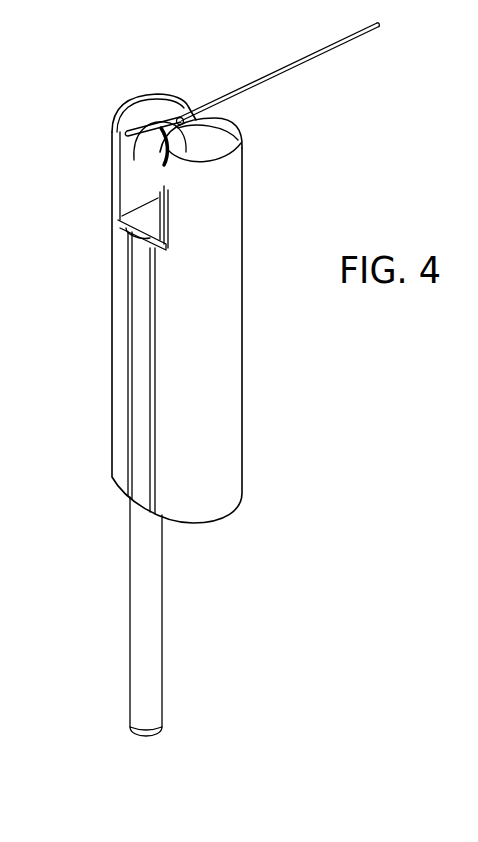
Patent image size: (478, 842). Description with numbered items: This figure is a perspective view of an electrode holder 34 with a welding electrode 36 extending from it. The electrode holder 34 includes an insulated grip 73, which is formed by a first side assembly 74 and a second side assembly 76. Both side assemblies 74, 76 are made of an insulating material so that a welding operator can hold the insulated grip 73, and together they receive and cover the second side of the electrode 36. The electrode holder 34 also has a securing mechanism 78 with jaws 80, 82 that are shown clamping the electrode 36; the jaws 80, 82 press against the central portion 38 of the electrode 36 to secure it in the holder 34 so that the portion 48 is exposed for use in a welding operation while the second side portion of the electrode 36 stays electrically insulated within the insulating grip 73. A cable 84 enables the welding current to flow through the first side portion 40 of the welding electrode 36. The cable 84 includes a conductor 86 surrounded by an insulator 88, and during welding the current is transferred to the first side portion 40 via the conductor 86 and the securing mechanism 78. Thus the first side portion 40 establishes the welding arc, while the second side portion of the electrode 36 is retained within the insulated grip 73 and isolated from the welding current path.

The electrode holder 34 is at (252, 222).
The welding electrode 36 is at (335, 58).
The central portion 38 is at (176, 126).
The first side portion 40 is at (301, 63).
The portion 48 is at (383, 26).
The insulated grip 73 is at (249, 177).
The first side assembly 74 is at (228, 313).
The second side assembly 76 is at (118, 308).
The securing mechanism 78 is at (136, 182).
The jaw 80 is at (214, 123).
The jaw 82 is at (152, 130).
The cable 84 is at (107, 626).
The conductor 86 is at (148, 738).
The insulator 88 is at (155, 612).